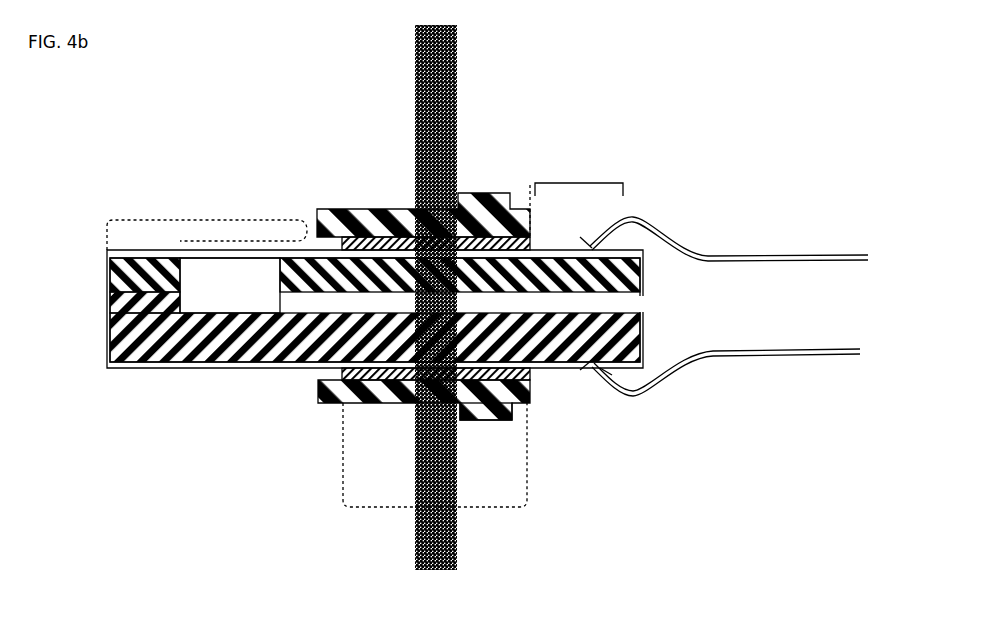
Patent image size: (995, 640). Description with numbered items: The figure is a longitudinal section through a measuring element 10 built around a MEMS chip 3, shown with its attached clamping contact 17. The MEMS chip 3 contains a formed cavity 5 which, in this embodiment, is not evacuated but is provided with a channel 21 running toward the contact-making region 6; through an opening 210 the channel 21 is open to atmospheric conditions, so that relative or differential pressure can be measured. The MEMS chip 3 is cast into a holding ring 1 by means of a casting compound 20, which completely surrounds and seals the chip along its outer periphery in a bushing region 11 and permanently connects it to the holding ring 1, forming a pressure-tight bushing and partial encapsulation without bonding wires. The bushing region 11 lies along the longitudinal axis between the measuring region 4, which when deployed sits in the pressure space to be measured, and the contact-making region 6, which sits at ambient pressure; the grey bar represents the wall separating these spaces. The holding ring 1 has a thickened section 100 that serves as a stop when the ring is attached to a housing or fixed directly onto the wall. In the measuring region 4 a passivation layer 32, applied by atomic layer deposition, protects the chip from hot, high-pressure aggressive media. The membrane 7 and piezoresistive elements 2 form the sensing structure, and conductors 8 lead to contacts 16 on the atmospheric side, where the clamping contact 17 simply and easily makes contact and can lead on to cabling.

The measuring element 10 is at (143, 195).
The passivation layer 32 is at (292, 240).
The piezoresistive elements 2 is at (195, 252).
The MEMS chip 3 is at (103, 300).
The membrane 7 is at (228, 257).
The cavity 5 is at (230, 281).
The measuring region 4 is at (186, 220).
The holding ring 1 is at (380, 230).
The channel 21 is at (533, 369).
The casting compound 20 is at (459, 194).
The thickened section 100 is at (468, 422).
The bushing region 11 is at (466, 508).
The conductors 8 is at (533, 247).
The contact-making region 6 is at (583, 183).
The contacts 16 is at (560, 247).
The opening 210 is at (617, 366).
The clamping contact 17 is at (655, 220).